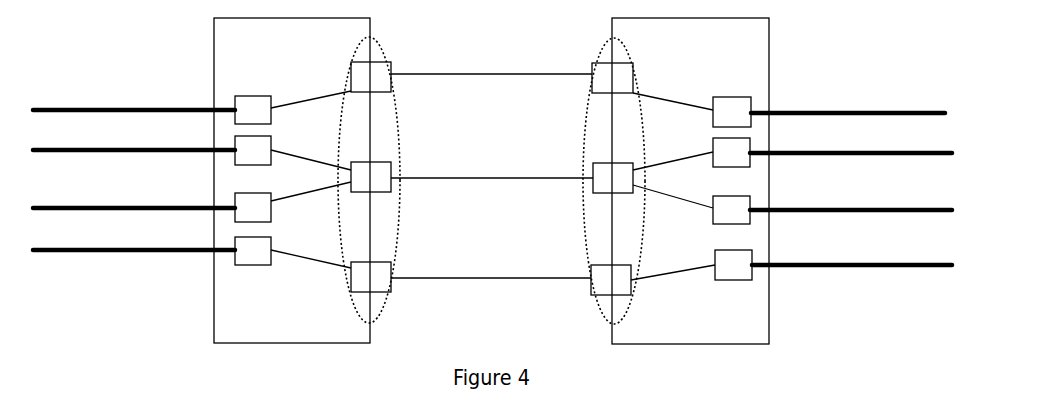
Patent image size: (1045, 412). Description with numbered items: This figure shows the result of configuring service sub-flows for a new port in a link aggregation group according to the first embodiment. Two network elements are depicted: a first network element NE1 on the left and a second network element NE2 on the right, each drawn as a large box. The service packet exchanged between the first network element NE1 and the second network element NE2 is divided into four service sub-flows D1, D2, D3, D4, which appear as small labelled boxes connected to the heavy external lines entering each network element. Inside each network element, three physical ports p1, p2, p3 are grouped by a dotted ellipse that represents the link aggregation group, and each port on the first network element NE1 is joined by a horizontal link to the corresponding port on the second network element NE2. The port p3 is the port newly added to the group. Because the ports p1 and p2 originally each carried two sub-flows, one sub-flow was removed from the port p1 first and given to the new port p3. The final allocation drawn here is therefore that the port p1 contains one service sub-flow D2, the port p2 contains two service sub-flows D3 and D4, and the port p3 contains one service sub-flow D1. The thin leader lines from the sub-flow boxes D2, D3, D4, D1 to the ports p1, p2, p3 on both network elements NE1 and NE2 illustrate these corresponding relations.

The first network element NE1 is at (307, 180).
The second network element NE2 is at (676, 181).
The physical port P1 p1 is at (492, 85).
The physical port P2 p2 is at (492, 179).
The physical port P3 p3 is at (493, 272).
The service sub-flow D1 is at (492, 258).
The service sub-flow D2 is at (489, 111).
The service sub-flow D3 is at (492, 151).
The service sub-flow D4 is at (492, 209).